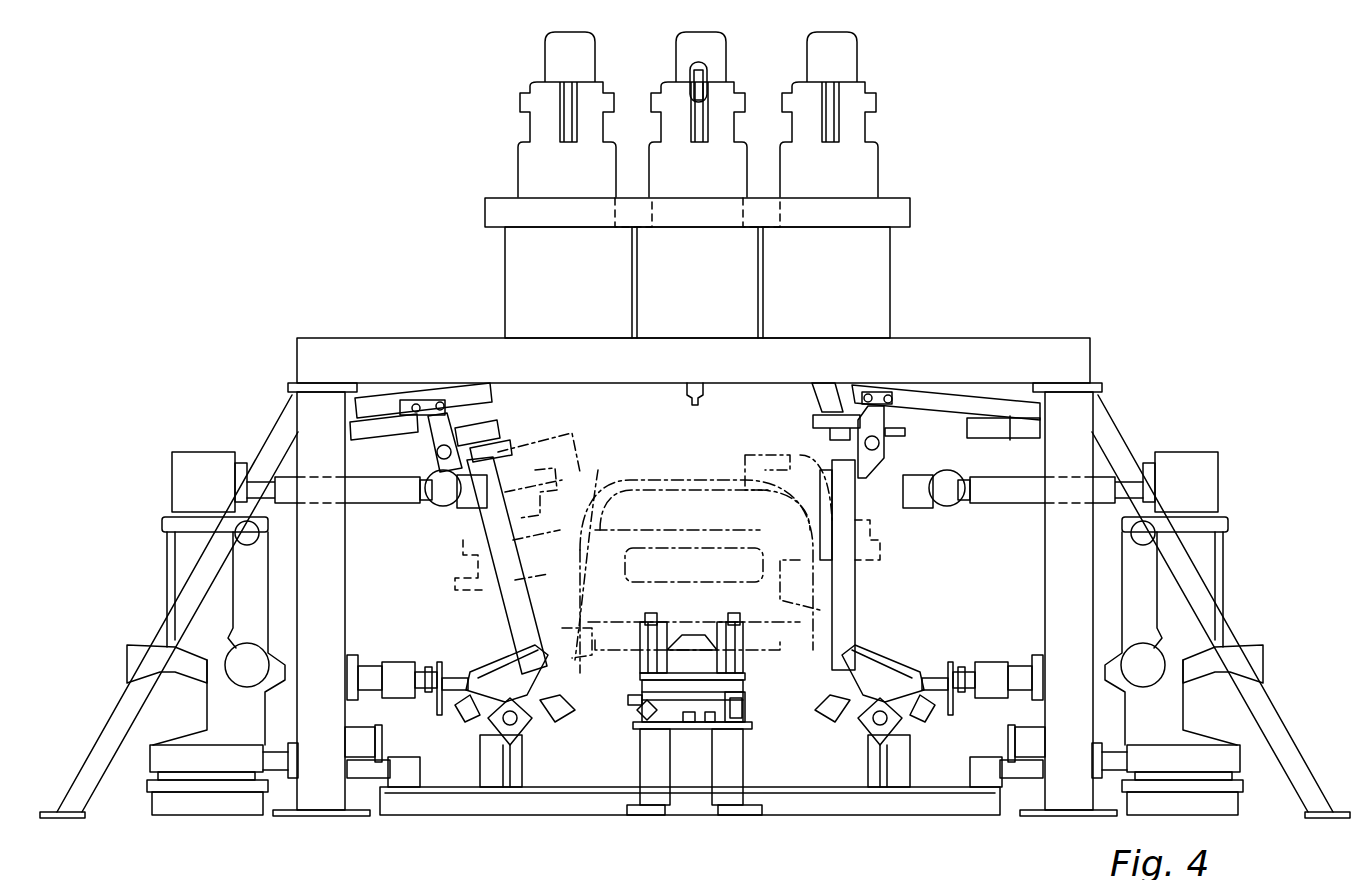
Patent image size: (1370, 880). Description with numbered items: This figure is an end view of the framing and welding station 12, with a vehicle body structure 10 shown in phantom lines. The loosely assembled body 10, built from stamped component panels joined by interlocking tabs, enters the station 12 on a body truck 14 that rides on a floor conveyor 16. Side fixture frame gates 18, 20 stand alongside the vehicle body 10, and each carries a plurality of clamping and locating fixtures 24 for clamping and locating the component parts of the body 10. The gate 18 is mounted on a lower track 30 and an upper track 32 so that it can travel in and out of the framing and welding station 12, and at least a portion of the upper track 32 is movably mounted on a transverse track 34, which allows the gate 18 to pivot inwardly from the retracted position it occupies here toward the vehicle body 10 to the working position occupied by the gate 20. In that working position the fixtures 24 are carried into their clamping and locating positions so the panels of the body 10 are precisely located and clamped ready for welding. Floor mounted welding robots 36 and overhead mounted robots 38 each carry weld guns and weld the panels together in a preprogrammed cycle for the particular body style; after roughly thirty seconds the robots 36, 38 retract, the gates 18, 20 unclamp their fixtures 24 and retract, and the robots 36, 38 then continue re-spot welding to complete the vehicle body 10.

The vehicle body structure 10 is at (683, 480).
The framing and welding station 12 is at (362, 268).
The body truck 14 is at (740, 683).
The floor conveyor 16 is at (648, 768).
The side fixture frame gate 18 is at (500, 605).
The side fixture frame gate 20 is at (883, 608).
The clamping and locating fixtures 24 is at (595, 478).
The lower track 30 is at (487, 722).
The upper track 32 is at (428, 392).
The transverse track 34 is at (483, 390).
The floor mounted welding robots 36 is at (175, 465).
The overhead mounted robots 38 is at (668, 100).